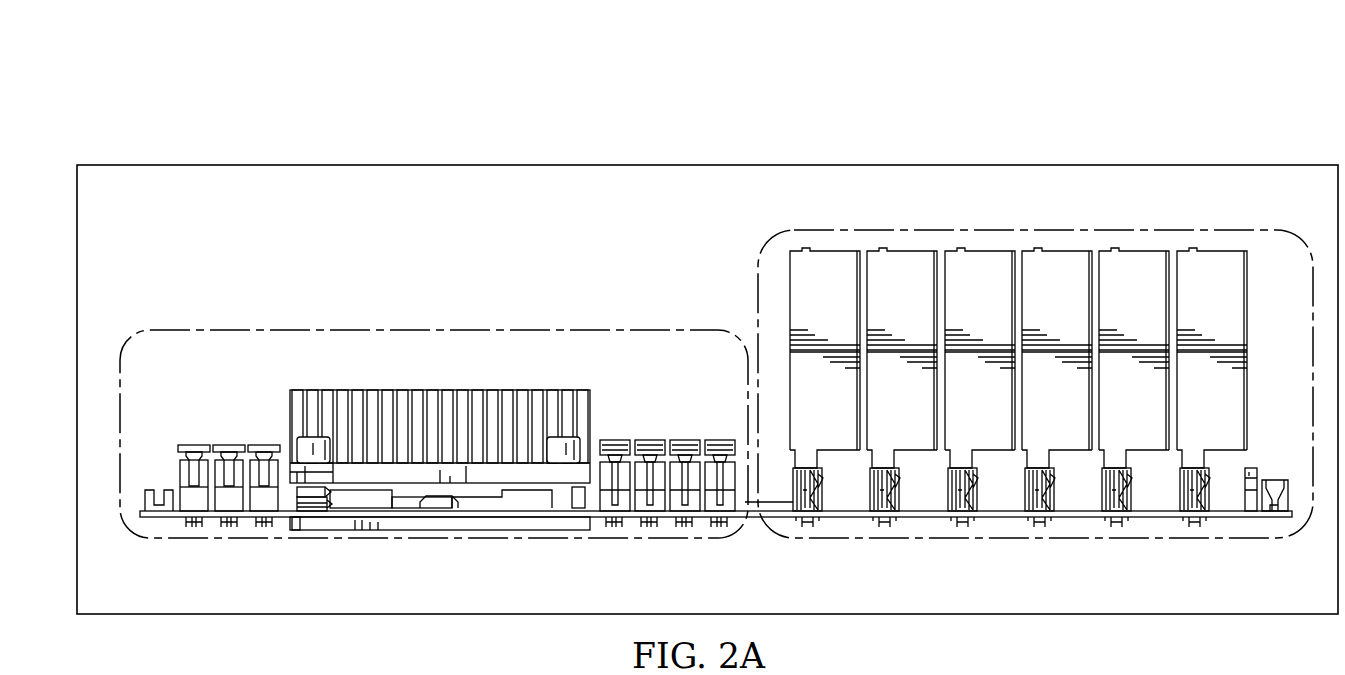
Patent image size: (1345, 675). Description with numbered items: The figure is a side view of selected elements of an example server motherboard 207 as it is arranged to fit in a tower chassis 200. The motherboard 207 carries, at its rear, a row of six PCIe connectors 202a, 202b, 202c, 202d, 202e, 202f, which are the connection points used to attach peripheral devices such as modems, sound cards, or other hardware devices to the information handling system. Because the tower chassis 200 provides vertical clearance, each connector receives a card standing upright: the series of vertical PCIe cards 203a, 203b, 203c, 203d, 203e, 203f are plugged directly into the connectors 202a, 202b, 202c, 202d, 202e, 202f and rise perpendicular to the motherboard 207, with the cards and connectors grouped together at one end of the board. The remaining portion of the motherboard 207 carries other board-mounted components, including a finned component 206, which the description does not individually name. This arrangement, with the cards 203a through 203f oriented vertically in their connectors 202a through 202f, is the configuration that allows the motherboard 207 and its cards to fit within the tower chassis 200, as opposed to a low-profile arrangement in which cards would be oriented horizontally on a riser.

The tower chassis 200 is at (226, 118).
The heat sink 206 is at (432, 390).
The server motherboard 207 is at (600, 520).
The vertical PCIe card 203f is at (832, 250).
The vertical PCIe card 203e is at (909, 250).
The vertical PCIe card 203d is at (987, 250).
The vertical PCIe card 203c is at (1064, 250).
The vertical PCIe card 203b is at (1141, 250).
The vertical PCIe card 203a is at (1219, 250).
The PCIe connector 202f is at (808, 500).
The PCIe connector 202e is at (885, 500).
The PCIe connector 202d is at (963, 500).
The PCIe connector 202c is at (1040, 500).
The PCIe connector 202b is at (1117, 500).
The PCIe connector 202a is at (1195, 500).